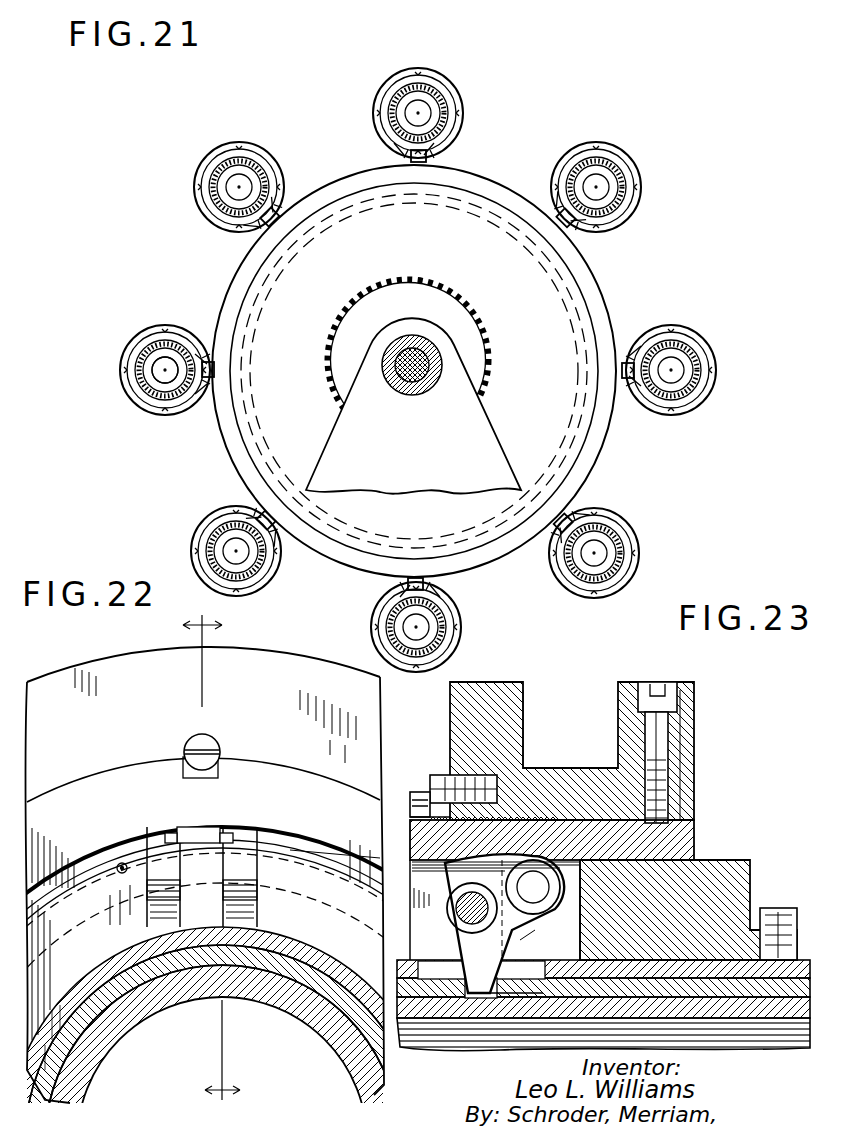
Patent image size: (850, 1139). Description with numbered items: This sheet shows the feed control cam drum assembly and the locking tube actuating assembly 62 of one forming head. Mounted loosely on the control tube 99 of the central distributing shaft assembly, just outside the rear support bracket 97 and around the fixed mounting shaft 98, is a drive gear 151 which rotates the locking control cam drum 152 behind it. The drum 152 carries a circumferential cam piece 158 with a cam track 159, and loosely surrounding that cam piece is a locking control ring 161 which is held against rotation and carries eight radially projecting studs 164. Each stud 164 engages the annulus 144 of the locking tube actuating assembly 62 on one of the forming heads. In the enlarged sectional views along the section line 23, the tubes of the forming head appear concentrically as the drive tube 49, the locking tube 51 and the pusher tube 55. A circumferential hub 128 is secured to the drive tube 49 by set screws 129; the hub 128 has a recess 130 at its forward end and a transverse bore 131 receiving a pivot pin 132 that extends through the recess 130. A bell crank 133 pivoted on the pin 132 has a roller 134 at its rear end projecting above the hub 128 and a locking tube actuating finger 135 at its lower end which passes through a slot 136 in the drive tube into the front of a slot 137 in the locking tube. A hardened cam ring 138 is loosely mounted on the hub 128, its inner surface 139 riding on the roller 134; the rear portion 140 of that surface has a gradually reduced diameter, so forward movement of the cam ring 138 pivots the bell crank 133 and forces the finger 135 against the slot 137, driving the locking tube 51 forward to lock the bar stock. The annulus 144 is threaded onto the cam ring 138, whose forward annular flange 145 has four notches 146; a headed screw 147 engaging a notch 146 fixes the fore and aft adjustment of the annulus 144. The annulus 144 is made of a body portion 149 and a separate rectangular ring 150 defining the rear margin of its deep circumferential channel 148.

In FIG. 22, the section line 23 is at (216, 870).
In FIG. 21, the drive tube 49 is at (138, 342).
In FIG. 22, the drive tube 49 is at (322, 972).
In FIG. 23, the drive tube 49 is at (772, 908).
In FIG. 21, the locking tube 51 is at (137, 362).
In FIG. 22, the locking tube 51 is at (302, 986).
In FIG. 23, the locking tube 51 is at (442, 990).
In FIG. 21, the pusher tube 55 is at (158, 378).
In FIG. 22, the pusher tube 55 is at (288, 1013).
In FIG. 23, the pusher tube 55 is at (485, 1010).
In FIG. 21, the locking tube actuating assembly 62 is at (437, 453).
In FIG. 22, the locking tube actuating assembly 62 is at (272, 876).
In FIG. 23, the locking tube actuating assembly 62 is at (590, 859).
In FIG. 21, the rear support bracket 97 is at (485, 400).
In FIG. 21, the fixed mounting shaft 98 is at (395, 362).
In FIG. 21, the control tube 99 is at (406, 394).
In FIG. 23, the circumferential hub 128 is at (695, 852).
In FIG. 23, the set screws 129 is at (747, 878).
In FIG. 22, the recess 130 is at (245, 917).
In FIG. 23, the recess 130 is at (412, 912).
In FIG. 22, the transverse bore 131 is at (318, 855).
In FIG. 22, the pivot pin 132 is at (278, 843).
In FIG. 23, the pivot pin 132 is at (455, 912).
In FIG. 22, the bell crank 133 is at (242, 929).
In FIG. 23, the bell crank 133 is at (522, 944).
In FIG. 22, the roller 134 is at (200, 832).
In FIG. 23, the roller 134 is at (525, 905).
In FIG. 22, the locking tube actuating finger 135 is at (180, 910).
In FIG. 23, the locking tube actuating finger 135 is at (510, 952).
In FIG. 22, the slot in drive tube 136 is at (145, 940).
In FIG. 23, the slot in drive tube 136 is at (442, 953).
In FIG. 22, the slot in locking tube 137 is at (125, 960).
In FIG. 23, the slot in locking tube 137 is at (528, 1020).
In FIG. 23, the cam ring 138 is at (695, 822).
In FIG. 22, the inner surface 139 is at (135, 835).
In FIG. 23, the inner surface 139 is at (450, 866).
In FIG. 23, the rear portion of inner surface 140 is at (573, 858).
In FIG. 21, the annulus 144 is at (461, 99).
In FIG. 23, the annulus 144 is at (508, 665).
In FIG. 21, the annular flange 145 is at (425, 70).
In FIG. 22, the annular flange 145 is at (120, 778).
In FIG. 23, the annular flange 145 is at (412, 795).
In FIG. 21, the notches 146 is at (701, 372).
In FIG. 22, the notches 146 is at (183, 770).
In FIG. 23, the notches 146 is at (422, 775).
In FIG. 22, the headed screw 147 is at (212, 740).
In FIG. 23, the headed screw 147 is at (435, 760).
In FIG. 23, the circumferential channel 148 is at (603, 708).
In FIG. 22, the body portion 149 is at (292, 652).
In FIG. 23, the body portion 149 is at (524, 698).
In FIG. 23, the rectangular ring 150 is at (695, 720).
In FIG. 21, the drive gear 151 is at (395, 288).
In FIG. 21, the locking control cam drum 152 is at (268, 446).
In FIG. 21, the circumferential cam piece 158 is at (251, 270).
In FIG. 21, the cam track 159 is at (253, 291).
In FIG. 21, the locking control ring 161 is at (605, 300).
In FIG. 21, the radially projecting studs 164 is at (432, 160).